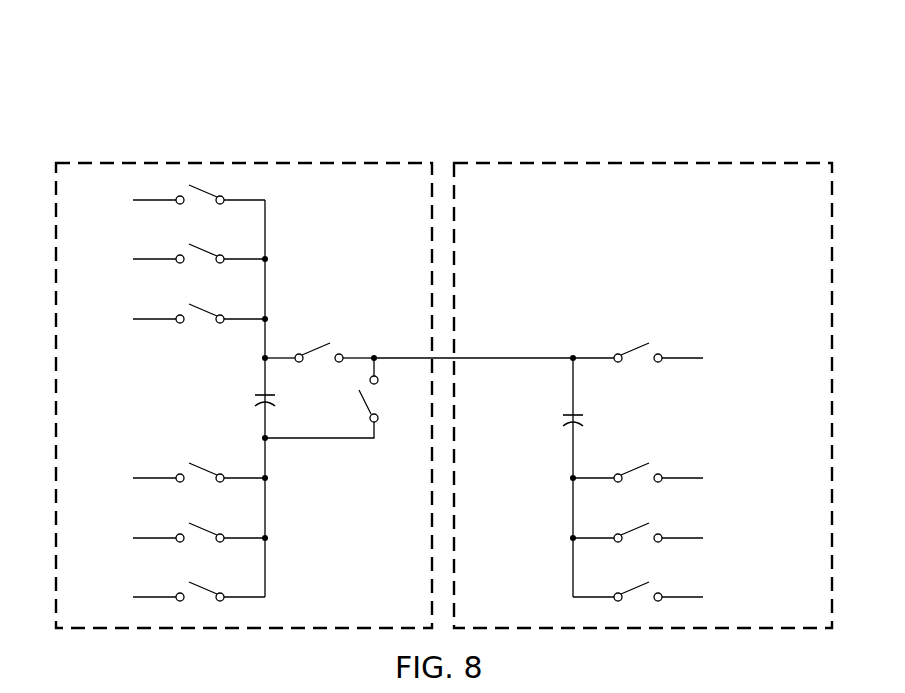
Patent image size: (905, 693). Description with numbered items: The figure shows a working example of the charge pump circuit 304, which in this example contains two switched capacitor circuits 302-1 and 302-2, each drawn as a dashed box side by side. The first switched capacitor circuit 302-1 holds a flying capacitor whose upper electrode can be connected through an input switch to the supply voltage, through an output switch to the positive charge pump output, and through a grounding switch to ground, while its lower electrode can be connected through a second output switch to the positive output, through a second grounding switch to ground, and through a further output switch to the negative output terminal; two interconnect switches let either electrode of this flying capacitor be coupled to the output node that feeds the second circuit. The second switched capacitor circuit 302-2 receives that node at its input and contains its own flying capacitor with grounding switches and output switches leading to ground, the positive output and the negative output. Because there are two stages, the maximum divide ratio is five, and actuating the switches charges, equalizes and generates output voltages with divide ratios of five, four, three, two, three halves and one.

The charge pump circuit 304 is at (252, 75).
The first switched capacitor circuit 302-1 is at (185, 163).
The second switched capacitor circuit 302-2 is at (703, 163).